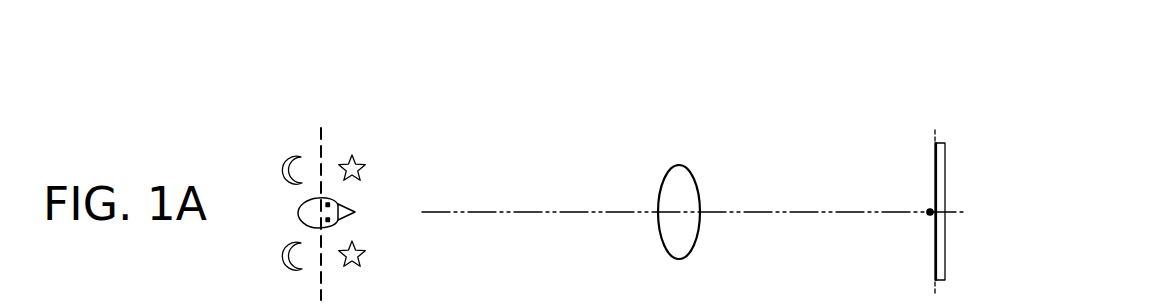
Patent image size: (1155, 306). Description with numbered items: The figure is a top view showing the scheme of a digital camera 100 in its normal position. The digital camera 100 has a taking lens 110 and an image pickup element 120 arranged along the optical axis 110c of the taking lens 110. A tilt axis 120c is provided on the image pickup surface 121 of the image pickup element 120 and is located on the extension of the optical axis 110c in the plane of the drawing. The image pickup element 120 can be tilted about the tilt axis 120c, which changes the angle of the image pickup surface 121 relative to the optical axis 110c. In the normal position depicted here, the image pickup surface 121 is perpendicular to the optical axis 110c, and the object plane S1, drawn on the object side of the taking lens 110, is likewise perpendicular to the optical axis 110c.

The digital camera 100 is at (1027, 113).
The taking lens 110 is at (690, 165).
The optical axis 110c is at (796, 211).
The image pickup element 120 is at (938, 140).
The tilt axis 120c is at (927, 209).
The image pickup surface 121 is at (935, 234).
The object plane S1 is at (322, 140).